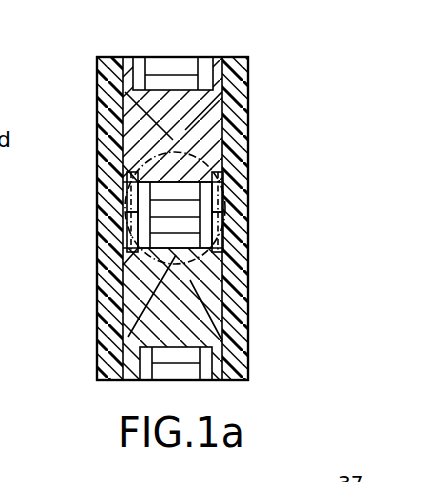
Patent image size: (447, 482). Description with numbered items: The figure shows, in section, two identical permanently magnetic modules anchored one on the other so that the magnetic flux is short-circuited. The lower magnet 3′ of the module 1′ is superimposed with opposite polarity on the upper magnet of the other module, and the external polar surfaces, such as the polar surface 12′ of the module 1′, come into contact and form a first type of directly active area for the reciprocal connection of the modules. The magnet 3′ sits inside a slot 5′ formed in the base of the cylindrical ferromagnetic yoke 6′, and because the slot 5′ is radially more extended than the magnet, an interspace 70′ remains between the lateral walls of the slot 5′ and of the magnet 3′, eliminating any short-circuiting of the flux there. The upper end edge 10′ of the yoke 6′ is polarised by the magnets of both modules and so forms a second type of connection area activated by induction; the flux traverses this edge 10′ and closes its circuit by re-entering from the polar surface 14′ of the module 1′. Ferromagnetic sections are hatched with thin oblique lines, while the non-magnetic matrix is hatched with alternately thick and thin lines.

The permanently magnetic module 1′ is at (91, 324).
The lower cylindrical magnetic element 3′ is at (248, 256).
The slot 5′ is at (248, 283).
The ferromagnetic yoke 6′ is at (203, 315).
The upper end edge 10′ is at (127, 228).
The external polar surface 12′ is at (125, 267).
The polar surface 14′ is at (100, 355).
The interspace 70′ is at (127, 250).